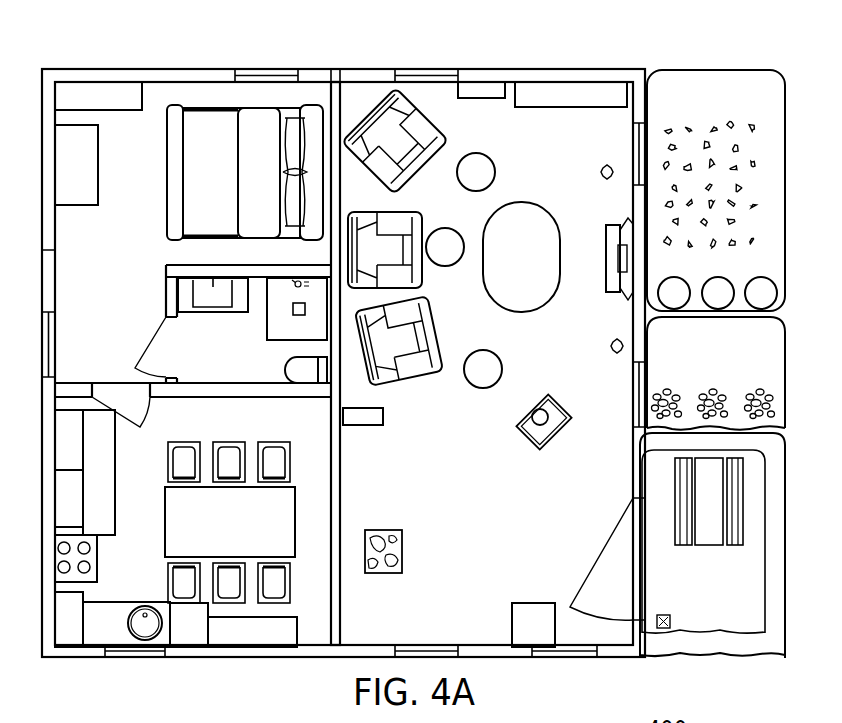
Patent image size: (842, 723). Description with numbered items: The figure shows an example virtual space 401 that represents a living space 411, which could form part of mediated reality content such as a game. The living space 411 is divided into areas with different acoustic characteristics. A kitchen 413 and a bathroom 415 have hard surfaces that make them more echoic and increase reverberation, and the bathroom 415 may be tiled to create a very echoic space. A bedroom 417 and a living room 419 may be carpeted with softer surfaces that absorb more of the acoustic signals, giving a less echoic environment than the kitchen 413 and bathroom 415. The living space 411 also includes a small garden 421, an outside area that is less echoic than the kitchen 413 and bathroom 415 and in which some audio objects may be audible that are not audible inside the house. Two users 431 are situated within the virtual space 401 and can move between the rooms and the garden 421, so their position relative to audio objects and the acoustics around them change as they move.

The virtual space 401 is at (629, 57).
The living space 411 is at (352, 69).
The kitchen 413 is at (331, 500).
The bathroom 415 is at (250, 361).
The bedroom 417 is at (140, 291).
The living room 419 is at (475, 459).
The garden 421 is at (742, 364).
The users 431 is at (549, 444).